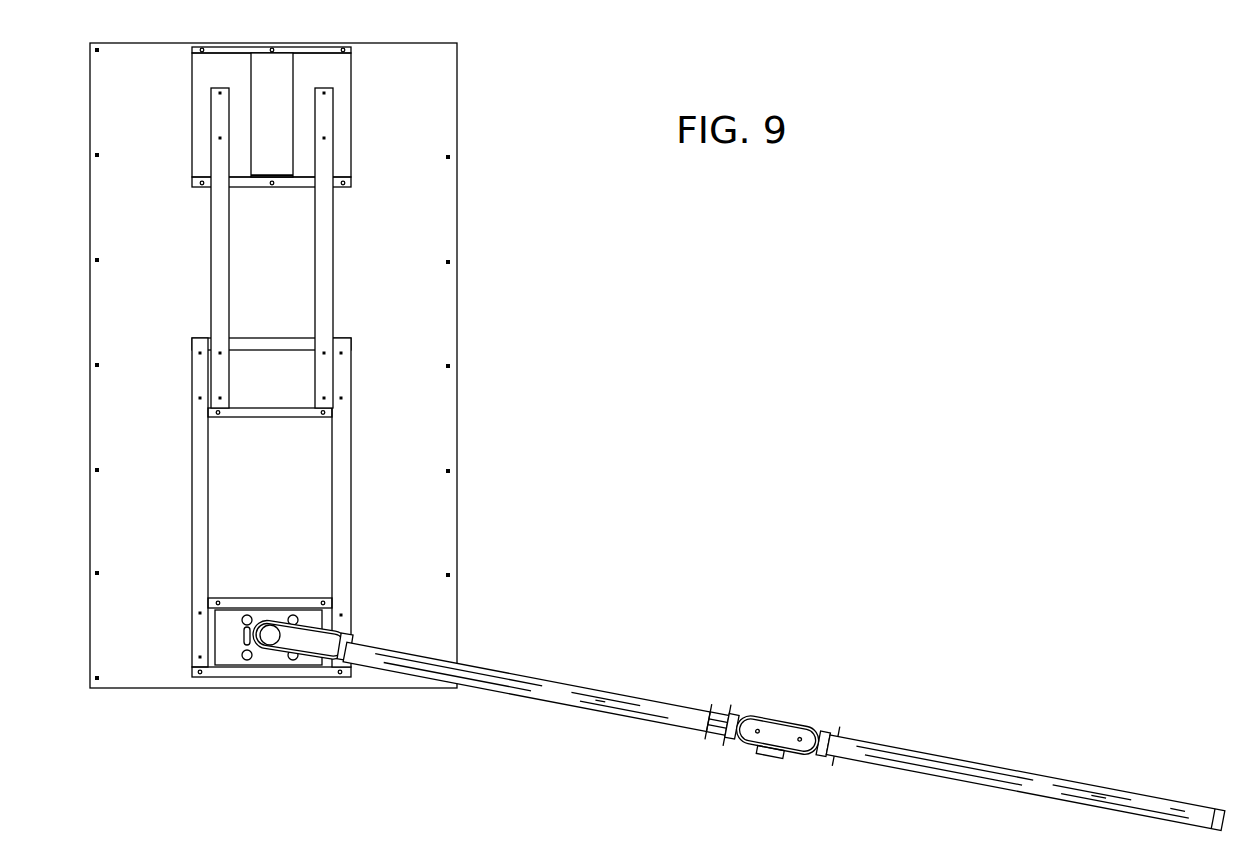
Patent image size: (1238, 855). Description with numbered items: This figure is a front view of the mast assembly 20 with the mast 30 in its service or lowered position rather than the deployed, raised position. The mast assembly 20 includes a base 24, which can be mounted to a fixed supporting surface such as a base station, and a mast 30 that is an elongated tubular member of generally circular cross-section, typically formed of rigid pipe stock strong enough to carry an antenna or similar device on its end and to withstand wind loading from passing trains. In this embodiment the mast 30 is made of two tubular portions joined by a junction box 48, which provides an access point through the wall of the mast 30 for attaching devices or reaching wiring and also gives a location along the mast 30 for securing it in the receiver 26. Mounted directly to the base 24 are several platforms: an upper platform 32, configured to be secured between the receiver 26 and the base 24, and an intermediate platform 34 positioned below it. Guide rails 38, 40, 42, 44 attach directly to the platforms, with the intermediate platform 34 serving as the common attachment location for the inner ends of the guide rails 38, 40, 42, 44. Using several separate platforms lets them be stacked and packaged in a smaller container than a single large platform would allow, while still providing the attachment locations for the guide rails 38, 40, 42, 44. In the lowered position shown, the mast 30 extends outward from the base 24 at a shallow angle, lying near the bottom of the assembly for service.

The mast assembly 20 is at (757, 280).
The base 24 is at (440, 133).
The receiver 26 is at (258, 163).
The mast 30 is at (603, 690).
The upper platform 32 is at (343, 70).
The intermediate platform 34 is at (246, 383).
The guide rail 38 is at (351, 542).
The guide rail 40 is at (333, 259).
The guide rail 42 is at (192, 528).
The guide rail 44 is at (211, 275).
The junction box 48 is at (777, 720).